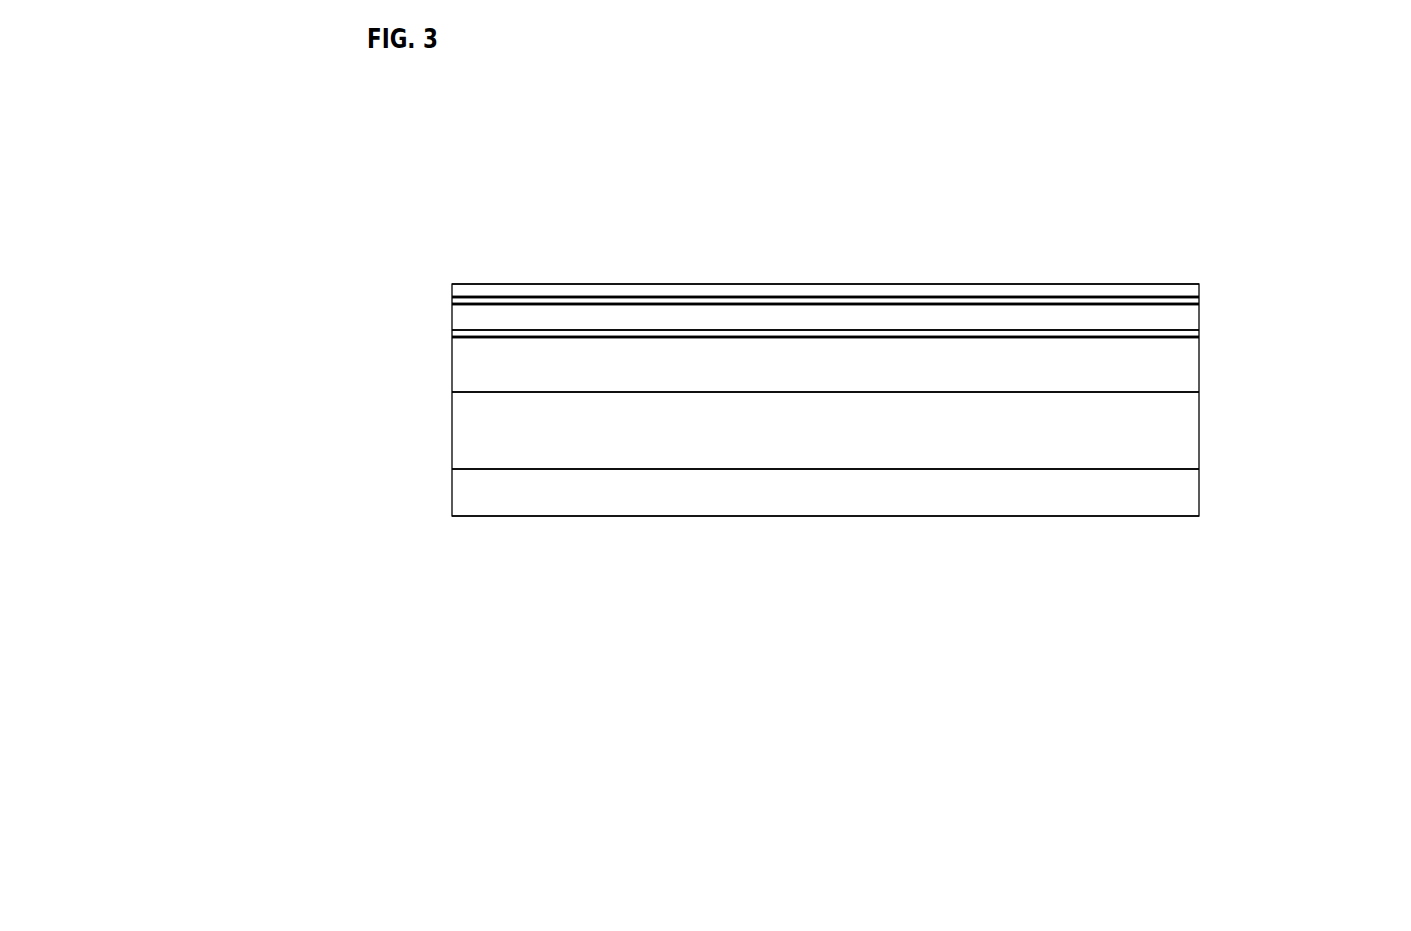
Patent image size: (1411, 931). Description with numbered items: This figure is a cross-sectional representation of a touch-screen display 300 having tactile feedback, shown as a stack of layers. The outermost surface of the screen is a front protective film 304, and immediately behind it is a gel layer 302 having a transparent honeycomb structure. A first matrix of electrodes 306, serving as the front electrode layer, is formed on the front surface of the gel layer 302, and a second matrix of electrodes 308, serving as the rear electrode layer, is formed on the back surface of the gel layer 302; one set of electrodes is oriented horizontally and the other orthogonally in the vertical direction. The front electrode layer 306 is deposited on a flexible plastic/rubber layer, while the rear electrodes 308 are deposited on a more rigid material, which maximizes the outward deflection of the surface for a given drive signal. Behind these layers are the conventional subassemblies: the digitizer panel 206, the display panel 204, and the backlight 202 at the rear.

The display stack 300 is at (825, 347).
The gel layer 302 is at (462, 313).
The front protective film 304 is at (839, 288).
The first matrix of electrodes 306 is at (1187, 295).
The second matrix of electrodes 308 is at (1188, 331).
The digitizer panel 206 is at (481, 377).
The display panel 204 is at (479, 438).
The backlight 202 is at (485, 500).